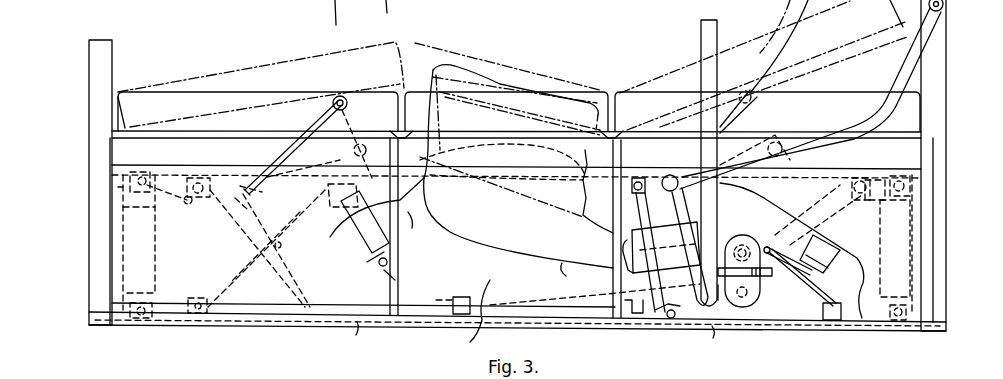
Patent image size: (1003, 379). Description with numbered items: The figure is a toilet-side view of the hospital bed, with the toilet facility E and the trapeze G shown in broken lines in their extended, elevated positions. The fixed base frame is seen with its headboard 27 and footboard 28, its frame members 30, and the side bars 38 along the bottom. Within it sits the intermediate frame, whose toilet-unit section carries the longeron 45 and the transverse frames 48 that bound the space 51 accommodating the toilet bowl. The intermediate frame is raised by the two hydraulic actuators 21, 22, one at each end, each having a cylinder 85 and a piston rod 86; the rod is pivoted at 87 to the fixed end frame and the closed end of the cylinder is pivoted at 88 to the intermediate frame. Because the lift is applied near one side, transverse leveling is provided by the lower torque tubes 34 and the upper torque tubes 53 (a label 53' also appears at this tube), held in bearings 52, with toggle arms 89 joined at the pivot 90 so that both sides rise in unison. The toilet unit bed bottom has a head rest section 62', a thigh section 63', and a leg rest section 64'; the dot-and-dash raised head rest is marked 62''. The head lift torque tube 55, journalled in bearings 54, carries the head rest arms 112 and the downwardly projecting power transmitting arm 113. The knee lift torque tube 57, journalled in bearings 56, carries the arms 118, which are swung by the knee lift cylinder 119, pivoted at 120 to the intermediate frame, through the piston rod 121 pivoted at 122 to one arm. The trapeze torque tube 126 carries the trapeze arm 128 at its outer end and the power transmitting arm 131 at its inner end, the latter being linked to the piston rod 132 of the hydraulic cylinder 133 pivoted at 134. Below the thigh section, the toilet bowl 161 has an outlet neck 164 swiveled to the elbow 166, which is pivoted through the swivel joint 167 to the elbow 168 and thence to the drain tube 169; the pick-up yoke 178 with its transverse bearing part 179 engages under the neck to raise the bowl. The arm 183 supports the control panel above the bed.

The hydraulic actuator 21 is at (911, 262).
The hydraulic actuator 22 is at (156, 256).
The headboard 27 is at (946, 113).
The footboard 28 is at (89, 57).
The frame members 30 is at (423, 328).
The lower torque tubes 34 is at (806, 322).
The side bars 38 is at (523, 341).
The longeron 45 is at (436, 182).
The transverse frames 48 is at (394, 273).
The space 51 is at (466, 315).
The bearings 52 is at (195, 185).
The upper torque tubes 53 is at (852, 174).
The pivot 53' is at (181, 207).
The bearings 54 is at (620, 182).
The head lift torque tube 55 is at (660, 177).
The bearings 56 is at (250, 192).
The knee lift torque tube 57 is at (242, 203).
The head rest section 62' is at (783, 85).
The seat back section raised 62'' is at (762, 65).
The thigh section 63' is at (507, 110).
The leg rest section 64' is at (261, 90).
The cylinder 85 is at (123, 223).
The piston rod 86 is at (123, 187).
The pivot 87 is at (143, 320).
The pivot 88 is at (897, 178).
The toggle arms 89 is at (823, 286).
The toggle pivot 90 is at (278, 245).
The head rest arms 112 is at (758, 148).
The power transmitting arm 113 is at (661, 247).
The knee lift arms 118 is at (276, 152).
The knee lift cylinder 119 is at (352, 252).
The pivot 120 is at (381, 268).
The piston rod 121 is at (336, 200).
The pivot 122 is at (330, 113).
The trapeze torque tube 126 is at (701, 198).
The trapeze arm 128 is at (944, 9).
The power transmitting arm 131 is at (667, 210).
The piston rod 132 is at (653, 326).
The hydraulic cylinder 133 is at (557, 294).
The pivot 134 is at (447, 306).
The toilet bowl 161 is at (432, 226).
The outlet neck 164 is at (587, 217).
The elbow 166 is at (733, 238).
The swivel joint 167 is at (748, 280).
The elbow 168 is at (745, 306).
The drain tube 169 is at (790, 306).
The pick-up yoke 178 is at (808, 272).
The transverse bearing part 179 is at (613, 246).
The arm 183 is at (701, 32).
The toilet facility E is at (524, 203).
The trapeze G is at (922, 68).